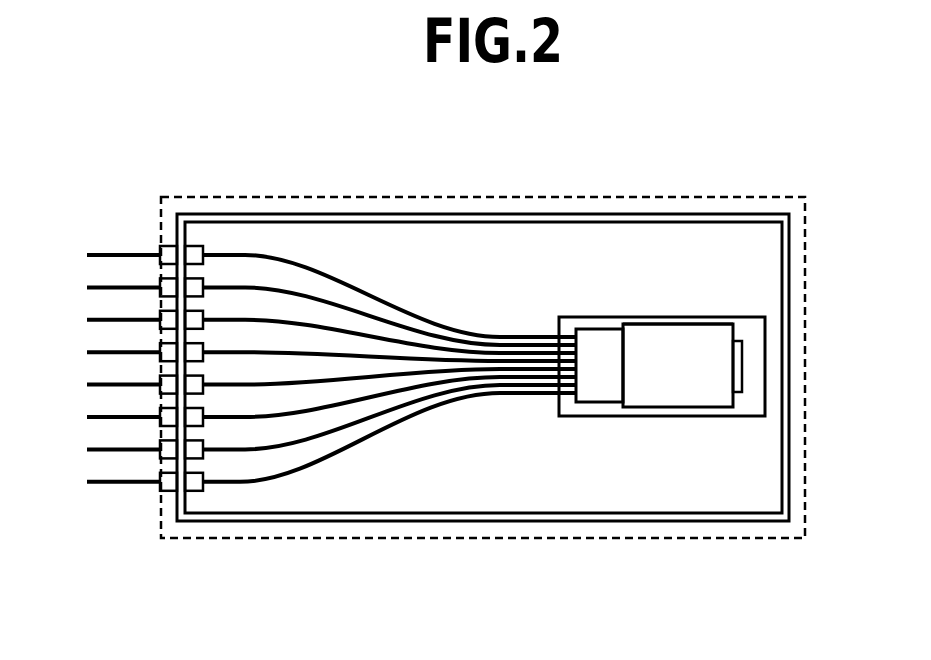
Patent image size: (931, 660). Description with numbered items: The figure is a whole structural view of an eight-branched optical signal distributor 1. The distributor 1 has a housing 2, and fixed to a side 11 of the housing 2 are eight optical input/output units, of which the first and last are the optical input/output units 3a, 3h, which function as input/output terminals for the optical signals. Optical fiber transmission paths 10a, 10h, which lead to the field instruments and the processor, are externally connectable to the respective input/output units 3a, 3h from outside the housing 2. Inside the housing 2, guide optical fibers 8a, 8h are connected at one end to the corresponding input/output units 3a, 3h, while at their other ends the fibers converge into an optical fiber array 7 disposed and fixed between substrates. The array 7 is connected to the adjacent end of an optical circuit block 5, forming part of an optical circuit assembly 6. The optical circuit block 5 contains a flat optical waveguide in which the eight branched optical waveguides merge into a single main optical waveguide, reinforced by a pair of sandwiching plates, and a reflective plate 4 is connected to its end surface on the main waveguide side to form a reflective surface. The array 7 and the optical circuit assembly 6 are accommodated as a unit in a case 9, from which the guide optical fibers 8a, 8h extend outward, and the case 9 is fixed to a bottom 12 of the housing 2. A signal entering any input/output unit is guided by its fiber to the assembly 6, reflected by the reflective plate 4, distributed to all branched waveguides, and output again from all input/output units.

The distributor 1 is at (172, 200).
The housing 2 is at (258, 213).
The optical input/output unit 3a is at (173, 247).
The optical input/output unit 3h is at (167, 490).
The reflective plate 4 is at (743, 347).
The optical circuit block 5 is at (682, 352).
The optical circuit assembly 6 is at (650, 327).
The optical fiber array 7 is at (603, 343).
The guide optical fiber 8a is at (303, 262).
The guide optical fiber 8h is at (312, 465).
The case 9 is at (671, 416).
The optical fiber transmission path 10a is at (112, 253).
The optical fiber transmission path 10h is at (110, 487).
The side 11 is at (178, 512).
The bottom 12 is at (525, 470).